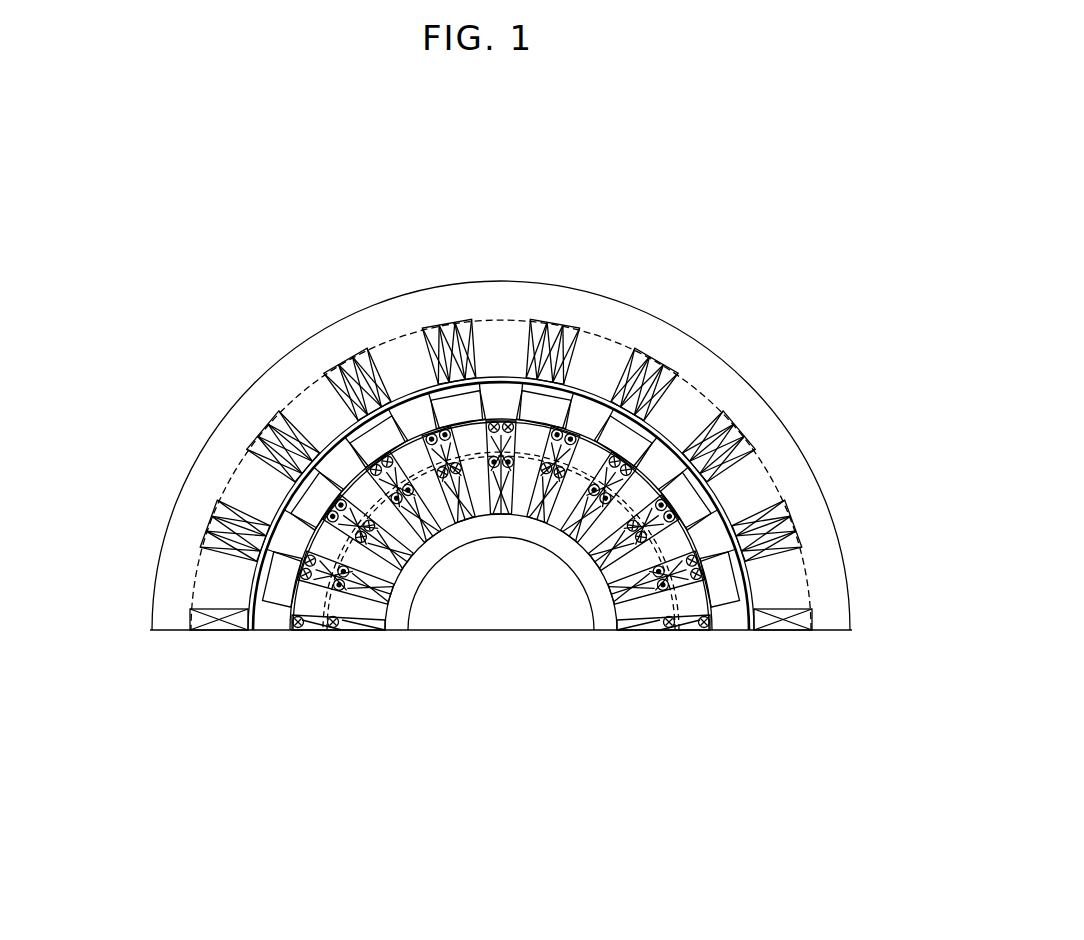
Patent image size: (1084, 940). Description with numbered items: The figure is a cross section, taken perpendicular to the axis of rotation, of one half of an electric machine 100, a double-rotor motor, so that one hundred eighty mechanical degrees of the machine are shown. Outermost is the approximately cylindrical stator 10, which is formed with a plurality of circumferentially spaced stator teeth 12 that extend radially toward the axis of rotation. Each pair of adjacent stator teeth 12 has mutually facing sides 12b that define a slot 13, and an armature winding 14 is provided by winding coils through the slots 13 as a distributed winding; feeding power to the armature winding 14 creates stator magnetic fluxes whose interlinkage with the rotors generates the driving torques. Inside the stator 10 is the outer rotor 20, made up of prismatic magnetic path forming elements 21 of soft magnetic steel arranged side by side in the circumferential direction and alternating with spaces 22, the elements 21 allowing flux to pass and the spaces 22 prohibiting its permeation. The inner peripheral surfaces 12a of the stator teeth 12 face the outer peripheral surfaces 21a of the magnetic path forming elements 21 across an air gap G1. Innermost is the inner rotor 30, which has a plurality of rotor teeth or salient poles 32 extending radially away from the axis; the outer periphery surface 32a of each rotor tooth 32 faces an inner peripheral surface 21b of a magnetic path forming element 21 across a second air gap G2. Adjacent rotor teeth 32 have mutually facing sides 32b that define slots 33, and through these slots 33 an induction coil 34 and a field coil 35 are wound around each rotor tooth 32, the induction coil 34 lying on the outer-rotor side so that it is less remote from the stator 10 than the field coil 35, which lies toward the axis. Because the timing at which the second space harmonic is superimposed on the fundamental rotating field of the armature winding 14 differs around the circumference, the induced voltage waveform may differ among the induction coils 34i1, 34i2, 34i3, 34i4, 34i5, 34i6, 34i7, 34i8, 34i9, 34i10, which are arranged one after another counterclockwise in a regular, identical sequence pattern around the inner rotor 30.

The electric machine 100 is at (657, 190).
The stator 10 is at (248, 413).
The stator teeth 12 is at (210, 566).
The inner peripheral surface 12a is at (217, 500).
The mutually facing sides 12b is at (211, 530).
The slots 13 is at (273, 427).
The armature winding 14 is at (300, 392).
The outer rotor 20 is at (725, 600).
The magnetic path forming elements 21 is at (727, 609).
The outer peripheral surface 21a is at (791, 620).
The inner peripheral surface 21b is at (700, 615).
The spaces 22 is at (786, 512).
The air gap G1 is at (737, 541).
The air gap G2 is at (678, 495).
The inner rotor 30 is at (481, 519).
The rotor teeth 32 is at (372, 616).
The outer periphery surface 32a is at (296, 620).
The mutually facing sides 32b is at (376, 591).
The slots 33 is at (393, 562).
The induction coil 34 is at (515, 192).
The induction coil 34i1 is at (679, 604).
The induction coil 34i2 is at (661, 550).
The induction coil 34i3 is at (628, 505).
The induction coil 34i4 is at (583, 472).
The induction coil 34i5 is at (529, 452).
The induction coil 34i6 is at (473, 452).
The induction coil 34i7 is at (419, 470).
The induction coil 34i8 is at (374, 503).
The induction coil 34i9 is at (341, 550).
The induction coil 34i10 is at (323, 604).
The field coil 35 is at (623, 619).